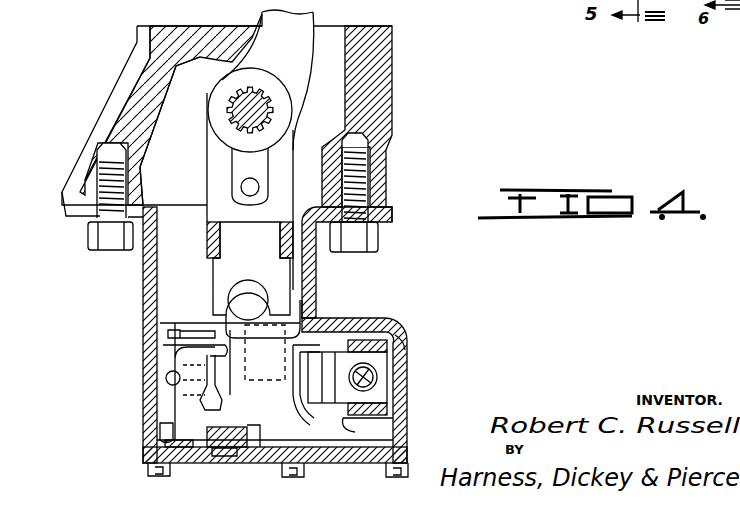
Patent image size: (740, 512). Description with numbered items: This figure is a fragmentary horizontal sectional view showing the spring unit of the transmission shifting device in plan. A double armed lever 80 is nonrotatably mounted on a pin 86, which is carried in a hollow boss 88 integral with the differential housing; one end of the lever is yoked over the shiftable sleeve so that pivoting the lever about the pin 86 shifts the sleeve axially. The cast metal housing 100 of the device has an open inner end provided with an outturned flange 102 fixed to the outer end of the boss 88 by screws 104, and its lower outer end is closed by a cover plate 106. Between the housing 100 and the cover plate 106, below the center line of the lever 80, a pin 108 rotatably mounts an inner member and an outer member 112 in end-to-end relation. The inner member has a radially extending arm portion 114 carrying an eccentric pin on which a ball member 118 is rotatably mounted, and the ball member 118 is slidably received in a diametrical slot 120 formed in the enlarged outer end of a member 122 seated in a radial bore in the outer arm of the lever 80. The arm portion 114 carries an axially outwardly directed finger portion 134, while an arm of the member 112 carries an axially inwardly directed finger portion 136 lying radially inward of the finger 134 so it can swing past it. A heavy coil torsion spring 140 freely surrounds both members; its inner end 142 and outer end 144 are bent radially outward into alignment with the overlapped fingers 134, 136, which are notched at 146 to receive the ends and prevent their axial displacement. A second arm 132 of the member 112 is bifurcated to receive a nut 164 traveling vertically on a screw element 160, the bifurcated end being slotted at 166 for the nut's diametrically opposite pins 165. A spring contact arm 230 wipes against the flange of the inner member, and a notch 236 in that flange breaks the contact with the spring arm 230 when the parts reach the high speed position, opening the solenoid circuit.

The double armed lever 80 is at (313, 26).
The pin 86 is at (232, 118).
The hollow boss 88 is at (386, 170).
The housing 100 is at (139, 294).
The outturned flange 102 is at (380, 220).
The screws 104 is at (90, 238).
The cover plate 106 is at (340, 470).
The pin 108 is at (225, 445).
The member 112 is at (255, 445).
The arm portion 114 is at (228, 320).
The ball member 118 is at (262, 301).
The diametrical slot 120 is at (246, 286).
The member 122 is at (215, 270).
The arm 132 is at (385, 420).
The finger portion 134 is at (350, 332).
The finger portion 136 is at (160, 415).
The coil torsion spring 140 is at (200, 390).
The spring end 142 is at (166, 378).
The spring end 144 is at (300, 410).
The notches 146 is at (217, 362).
The screw element 160 is at (378, 381).
The nut 164 is at (385, 366).
The pins 165 is at (396, 334).
The slot 166 is at (584, 0).
The spring contact arm 230 is at (168, 334).
The notch 236 is at (178, 346).